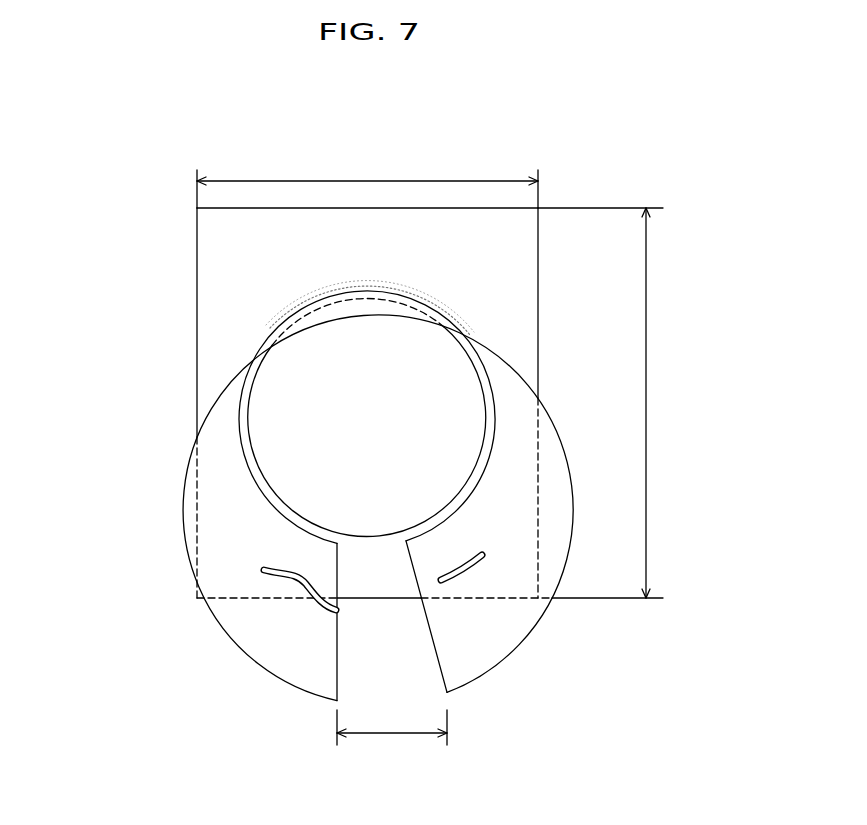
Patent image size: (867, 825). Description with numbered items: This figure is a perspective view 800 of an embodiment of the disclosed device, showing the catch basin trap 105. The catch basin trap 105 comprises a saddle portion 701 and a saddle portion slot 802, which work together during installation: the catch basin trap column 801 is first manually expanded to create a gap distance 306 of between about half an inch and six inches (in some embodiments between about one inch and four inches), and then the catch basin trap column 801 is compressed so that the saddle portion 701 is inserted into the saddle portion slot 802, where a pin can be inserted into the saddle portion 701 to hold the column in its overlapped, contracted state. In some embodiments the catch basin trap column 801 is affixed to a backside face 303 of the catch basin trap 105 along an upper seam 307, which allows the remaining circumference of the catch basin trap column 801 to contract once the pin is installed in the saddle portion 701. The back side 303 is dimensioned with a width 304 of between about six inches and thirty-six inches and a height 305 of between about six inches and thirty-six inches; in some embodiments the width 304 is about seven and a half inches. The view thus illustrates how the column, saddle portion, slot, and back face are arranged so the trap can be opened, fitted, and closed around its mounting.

The perspective view 800 is at (122, 253).
The catch basin trap 105 is at (538, 265).
The backside face 303 is at (495, 275).
The width 304 is at (443, 180).
The height 305 is at (646, 367).
The gap distance 306 is at (396, 735).
The upper seam 307 is at (317, 297).
The catch basin trap column 801 is at (293, 335).
The saddle portion slot 802 is at (473, 572).
The saddle portion 701 is at (300, 582).